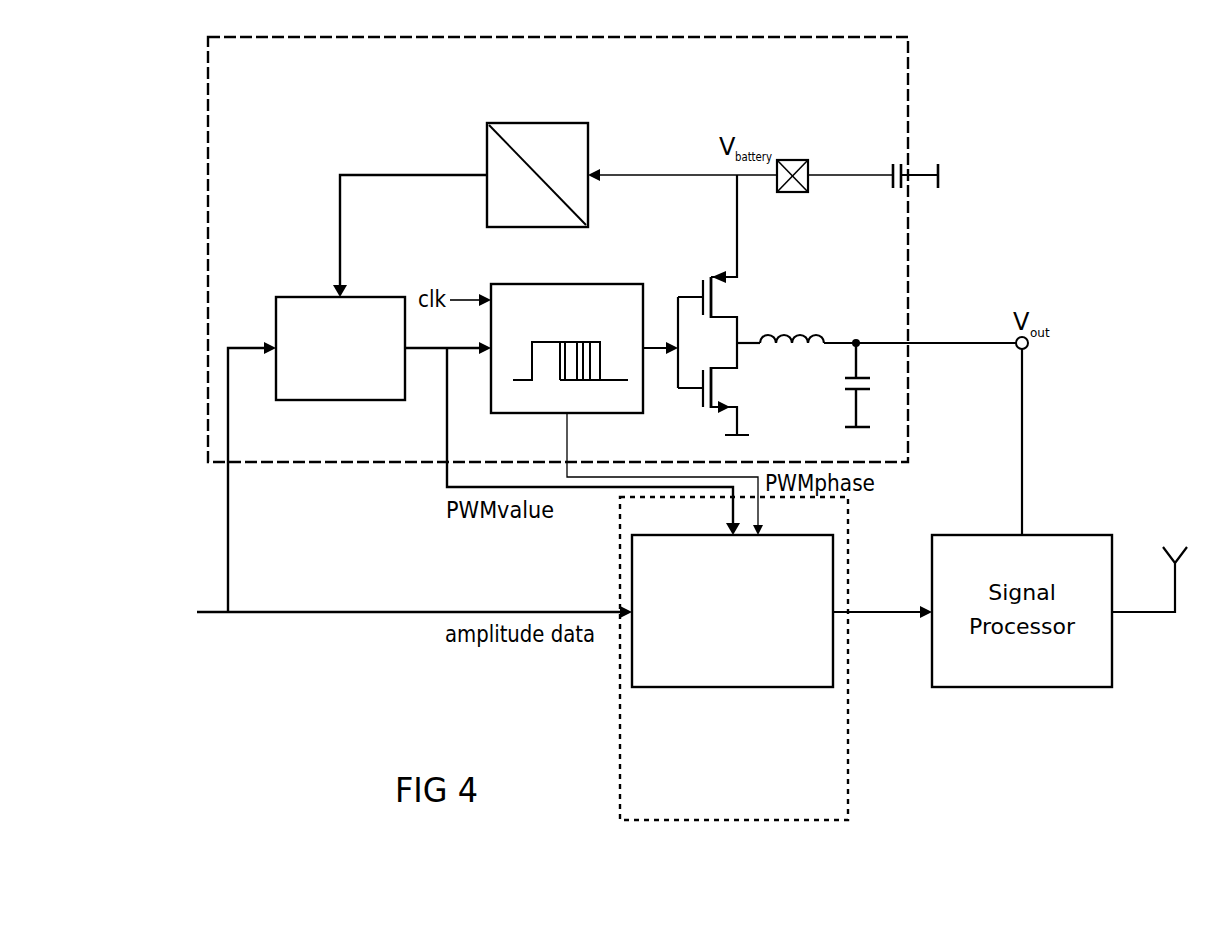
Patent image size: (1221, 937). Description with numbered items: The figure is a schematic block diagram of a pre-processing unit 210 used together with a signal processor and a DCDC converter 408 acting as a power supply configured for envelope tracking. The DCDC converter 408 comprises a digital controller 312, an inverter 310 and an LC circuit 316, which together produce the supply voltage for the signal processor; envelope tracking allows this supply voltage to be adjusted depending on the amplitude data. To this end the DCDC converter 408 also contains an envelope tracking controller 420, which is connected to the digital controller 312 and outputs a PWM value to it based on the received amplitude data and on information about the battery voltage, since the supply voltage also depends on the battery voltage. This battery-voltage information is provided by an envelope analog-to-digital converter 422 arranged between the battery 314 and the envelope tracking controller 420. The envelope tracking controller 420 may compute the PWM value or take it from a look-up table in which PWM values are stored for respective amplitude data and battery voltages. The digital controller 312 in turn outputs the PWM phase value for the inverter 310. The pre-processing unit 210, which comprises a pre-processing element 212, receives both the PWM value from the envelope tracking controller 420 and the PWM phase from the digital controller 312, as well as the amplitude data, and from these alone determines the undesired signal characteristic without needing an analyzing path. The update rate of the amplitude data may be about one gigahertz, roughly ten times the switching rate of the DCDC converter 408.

The DCDC converter 408 is at (908, 88).
The envelope analog-to-digital converter 422 is at (535, 123).
The envelope tracking controller 420 is at (295, 297).
The digital controller 312 is at (622, 284).
The inverter 310 is at (713, 275).
The battery 314 is at (893, 163).
The LC circuit 316 is at (851, 325).
The pre-processing element 212 is at (733, 688).
The pre-processing unit 210 is at (848, 790).